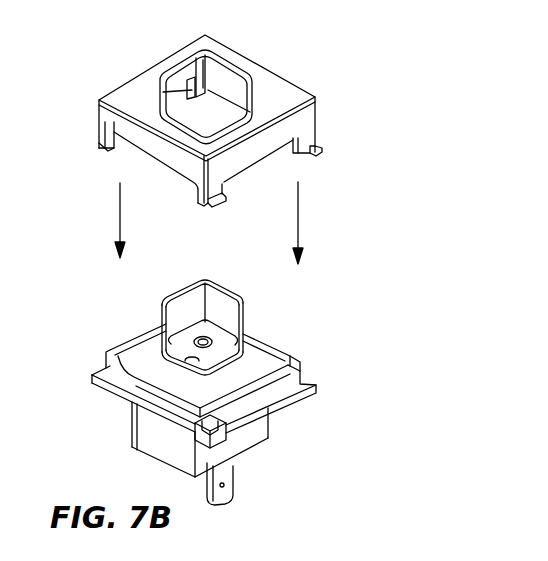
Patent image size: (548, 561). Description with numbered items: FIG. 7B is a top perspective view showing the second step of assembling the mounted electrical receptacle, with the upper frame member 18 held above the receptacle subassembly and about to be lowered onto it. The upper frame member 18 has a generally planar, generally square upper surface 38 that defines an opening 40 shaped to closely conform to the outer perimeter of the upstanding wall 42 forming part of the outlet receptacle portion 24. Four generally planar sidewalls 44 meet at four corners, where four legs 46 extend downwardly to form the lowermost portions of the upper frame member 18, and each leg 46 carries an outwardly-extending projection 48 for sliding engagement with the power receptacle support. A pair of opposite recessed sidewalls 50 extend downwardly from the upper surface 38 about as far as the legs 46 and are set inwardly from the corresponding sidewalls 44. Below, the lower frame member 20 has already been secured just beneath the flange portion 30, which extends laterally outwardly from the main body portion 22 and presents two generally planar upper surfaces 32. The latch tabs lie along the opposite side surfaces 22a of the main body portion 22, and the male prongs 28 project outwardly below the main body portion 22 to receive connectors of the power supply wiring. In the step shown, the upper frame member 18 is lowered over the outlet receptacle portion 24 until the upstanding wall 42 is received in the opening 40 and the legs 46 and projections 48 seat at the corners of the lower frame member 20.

The upper frame member 18 is at (116, 52).
The upper surface 38 is at (278, 92).
The opening 40 is at (231, 77).
The sidewalls 44 is at (298, 125).
The recessed sidewalls 50 is at (140, 152).
The legs 46 is at (97, 128).
The projections 48 is at (315, 160).
The outlet receptacle portion 24 is at (239, 279).
The upstanding wall 42 is at (180, 290).
The lower frame member 20 is at (123, 392).
The upper surface 32 is at (142, 360).
The flange portion 30 is at (270, 352).
The main body portion 22 is at (140, 432).
The side surfaces 22a is at (256, 440).
The male prongs 28 is at (234, 479).